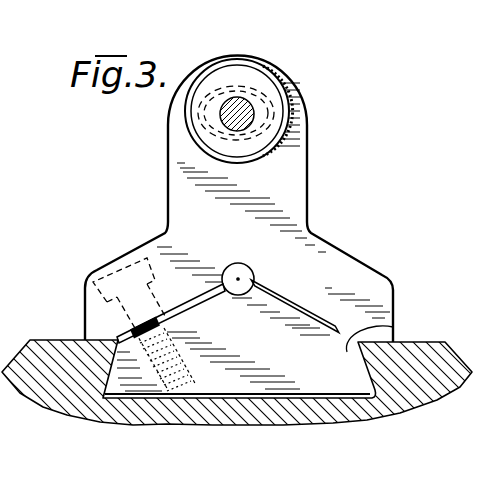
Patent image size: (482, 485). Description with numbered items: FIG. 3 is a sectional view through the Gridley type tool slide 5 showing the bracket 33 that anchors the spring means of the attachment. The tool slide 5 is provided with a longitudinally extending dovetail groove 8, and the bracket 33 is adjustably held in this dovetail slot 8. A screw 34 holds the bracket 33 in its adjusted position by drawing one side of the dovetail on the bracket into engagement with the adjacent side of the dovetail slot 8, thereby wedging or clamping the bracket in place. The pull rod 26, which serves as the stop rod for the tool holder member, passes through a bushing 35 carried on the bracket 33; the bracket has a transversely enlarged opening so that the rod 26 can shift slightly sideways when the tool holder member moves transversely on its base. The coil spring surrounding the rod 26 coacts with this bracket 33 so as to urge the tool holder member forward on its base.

The tool slide 5 is at (36, 352).
The dovetail groove 8 is at (383, 320).
The pull rod 26 is at (236, 128).
The bracket 33 is at (176, 186).
The screw 34 is at (113, 272).
The bushing 35 is at (191, 120).